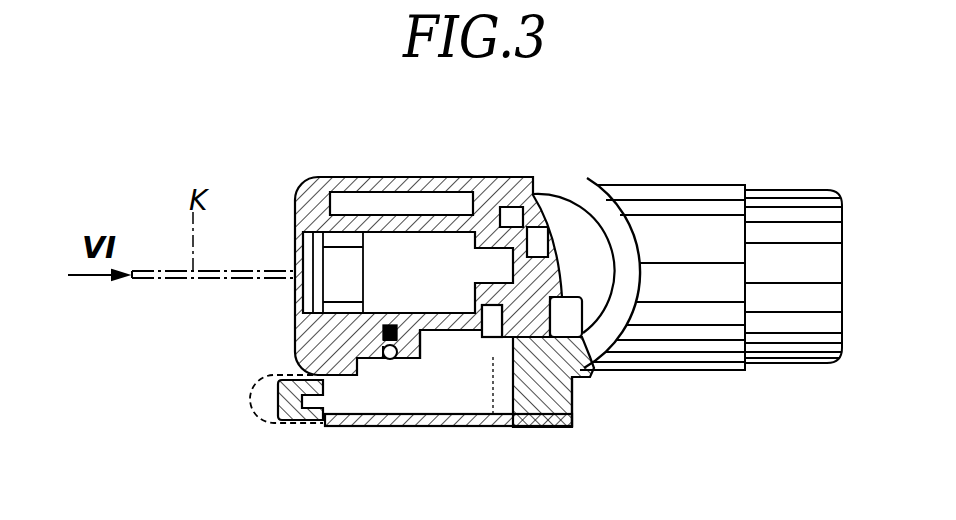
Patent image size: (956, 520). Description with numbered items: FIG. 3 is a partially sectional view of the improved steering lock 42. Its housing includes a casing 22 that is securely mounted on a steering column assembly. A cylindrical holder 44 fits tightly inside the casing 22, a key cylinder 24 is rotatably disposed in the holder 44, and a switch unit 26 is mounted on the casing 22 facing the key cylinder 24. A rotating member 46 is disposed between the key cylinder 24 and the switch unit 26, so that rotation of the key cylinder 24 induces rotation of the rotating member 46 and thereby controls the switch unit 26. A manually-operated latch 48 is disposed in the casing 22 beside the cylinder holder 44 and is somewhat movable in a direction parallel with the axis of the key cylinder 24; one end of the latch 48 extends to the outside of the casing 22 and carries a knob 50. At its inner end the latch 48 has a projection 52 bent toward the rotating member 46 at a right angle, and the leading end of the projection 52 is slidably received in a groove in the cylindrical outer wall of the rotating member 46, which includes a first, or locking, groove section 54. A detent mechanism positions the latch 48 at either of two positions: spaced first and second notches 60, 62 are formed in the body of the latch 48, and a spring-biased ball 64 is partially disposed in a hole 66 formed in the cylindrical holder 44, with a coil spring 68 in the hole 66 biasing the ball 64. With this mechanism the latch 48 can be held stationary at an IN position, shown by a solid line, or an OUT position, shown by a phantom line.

The casing 22 is at (634, 203).
The key cylinder 24 is at (391, 253).
The switch unit 26 is at (790, 223).
The steering lock 42 is at (672, 153).
The cylindrical holder 44 is at (293, 343).
The rotating member 46 is at (500, 205).
The manually-operated latch 48 is at (477, 400).
The knob 50 is at (283, 400).
The projection 52 is at (535, 395).
The first groove section 54 is at (573, 400).
The first notch 60 is at (421, 357).
The second notch 62 is at (395, 360).
The spring-biased ball 64 is at (383, 358).
The hole 66 is at (391, 322).
The coil spring 68 is at (387, 341).